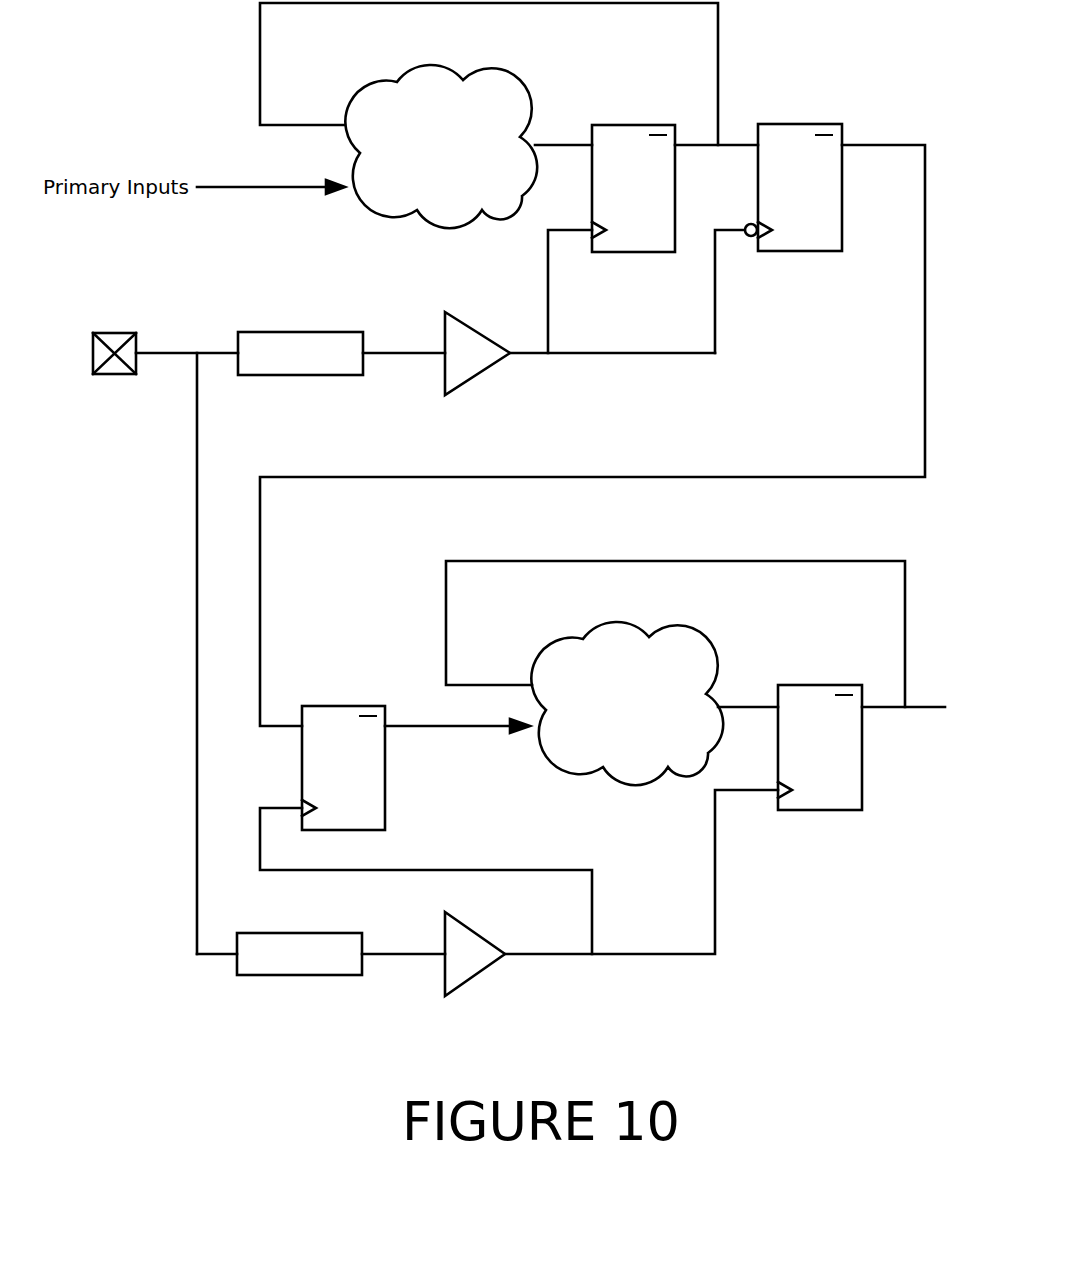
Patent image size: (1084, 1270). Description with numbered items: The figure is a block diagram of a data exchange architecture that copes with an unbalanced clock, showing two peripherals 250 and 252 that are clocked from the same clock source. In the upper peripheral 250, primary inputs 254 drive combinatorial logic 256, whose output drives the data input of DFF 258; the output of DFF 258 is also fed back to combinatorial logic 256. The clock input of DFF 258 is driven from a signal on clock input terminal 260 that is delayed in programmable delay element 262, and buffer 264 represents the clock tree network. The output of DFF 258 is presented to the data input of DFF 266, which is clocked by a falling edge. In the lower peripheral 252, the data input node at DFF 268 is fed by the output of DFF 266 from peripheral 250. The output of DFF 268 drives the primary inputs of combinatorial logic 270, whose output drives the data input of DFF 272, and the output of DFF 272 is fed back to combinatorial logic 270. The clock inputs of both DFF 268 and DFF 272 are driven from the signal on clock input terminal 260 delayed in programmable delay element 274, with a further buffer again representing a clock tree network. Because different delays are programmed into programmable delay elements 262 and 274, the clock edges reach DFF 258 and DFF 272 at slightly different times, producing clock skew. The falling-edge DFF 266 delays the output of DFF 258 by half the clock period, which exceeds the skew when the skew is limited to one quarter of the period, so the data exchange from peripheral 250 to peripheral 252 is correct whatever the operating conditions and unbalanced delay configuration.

The peripheral 250 is at (453, 279).
The peripheral 252 is at (488, 802).
The primary inputs 254 is at (122, 371).
The combinatorial logic 256 is at (300, 330).
The DFF 258 is at (492, 348).
The clock input terminal 260 is at (637, 166).
The programmable delay element 262 is at (467, 144).
The buffer 264 is at (816, 163).
The DFF 266 is at (343, 740).
The DFF 268 is at (299, 931).
The combinatorial logic 270 is at (497, 951).
The DFF 272 is at (823, 725).
The programmable delay element 274 is at (653, 702).